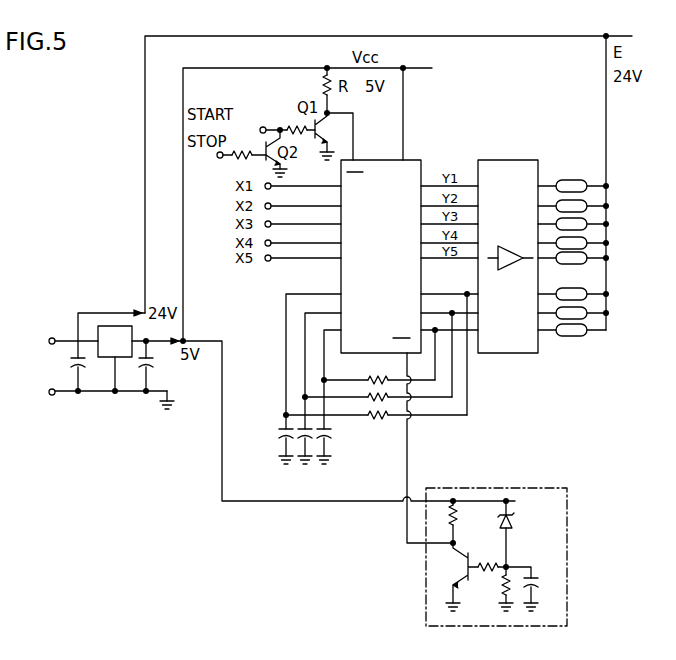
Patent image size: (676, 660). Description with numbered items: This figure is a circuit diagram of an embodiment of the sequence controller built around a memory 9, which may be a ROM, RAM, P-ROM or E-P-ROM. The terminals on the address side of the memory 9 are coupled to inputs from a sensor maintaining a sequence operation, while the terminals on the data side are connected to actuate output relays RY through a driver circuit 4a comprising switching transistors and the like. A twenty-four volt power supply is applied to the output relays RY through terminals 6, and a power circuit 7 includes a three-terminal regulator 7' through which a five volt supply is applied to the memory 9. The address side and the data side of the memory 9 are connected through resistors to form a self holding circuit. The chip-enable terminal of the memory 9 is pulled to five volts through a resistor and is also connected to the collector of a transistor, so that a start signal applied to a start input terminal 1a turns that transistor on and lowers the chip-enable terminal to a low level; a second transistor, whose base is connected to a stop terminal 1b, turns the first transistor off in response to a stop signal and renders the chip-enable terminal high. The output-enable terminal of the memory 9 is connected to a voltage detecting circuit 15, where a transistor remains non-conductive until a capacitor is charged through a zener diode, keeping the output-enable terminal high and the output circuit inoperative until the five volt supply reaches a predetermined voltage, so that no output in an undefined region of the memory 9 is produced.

The start input terminal 1a is at (262, 126).
The stop terminal 1b is at (220, 158).
The driver circuit 4a is at (509, 160).
The terminals 6 is at (49, 340).
The power circuit 7 is at (120, 367).
The three-terminal regulator 7' is at (107, 375).
The memory 9 is at (418, 160).
The voltage detecting circuit 15 is at (567, 537).
The output relays RY is at (567, 180).